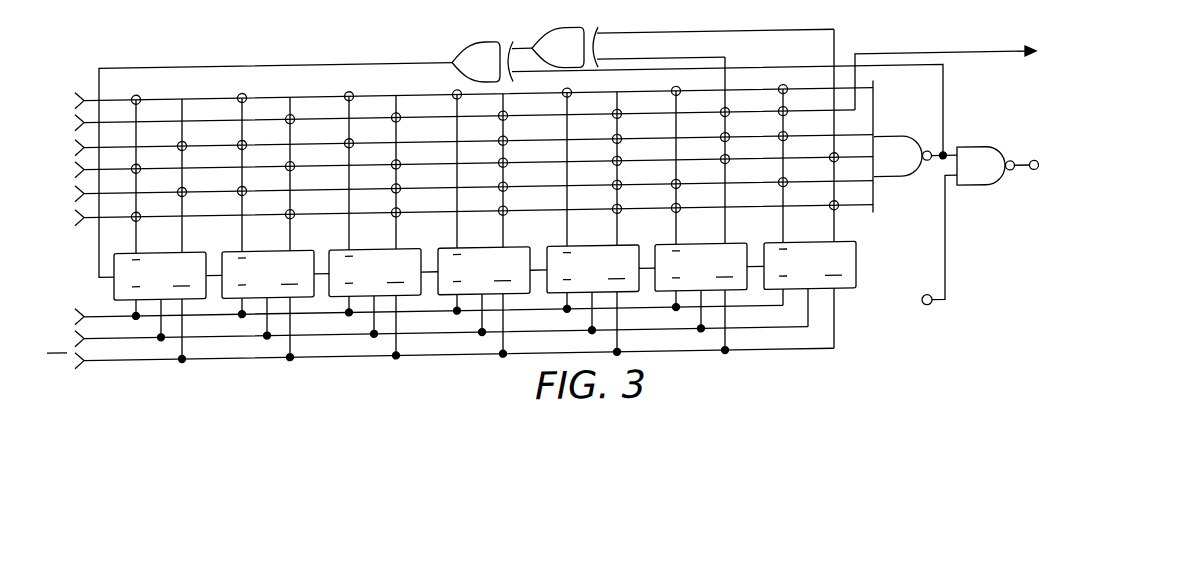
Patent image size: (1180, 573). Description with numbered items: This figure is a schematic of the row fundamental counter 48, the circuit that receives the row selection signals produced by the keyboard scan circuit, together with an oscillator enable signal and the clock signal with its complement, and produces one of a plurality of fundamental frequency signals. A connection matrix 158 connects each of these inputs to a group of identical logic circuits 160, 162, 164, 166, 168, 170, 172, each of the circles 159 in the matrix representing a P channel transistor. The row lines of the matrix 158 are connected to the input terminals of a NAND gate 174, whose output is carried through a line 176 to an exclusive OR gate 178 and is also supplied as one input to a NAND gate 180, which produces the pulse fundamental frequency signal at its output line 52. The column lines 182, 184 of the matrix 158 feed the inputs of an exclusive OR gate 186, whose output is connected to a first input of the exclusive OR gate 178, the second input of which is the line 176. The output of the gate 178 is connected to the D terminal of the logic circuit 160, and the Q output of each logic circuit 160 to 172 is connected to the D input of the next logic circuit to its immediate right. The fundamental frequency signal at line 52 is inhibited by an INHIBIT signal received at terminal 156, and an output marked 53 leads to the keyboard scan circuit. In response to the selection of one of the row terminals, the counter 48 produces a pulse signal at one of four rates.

The row fundamental counter 48 is at (330, 55).
The connection matrix 158 is at (408, 92).
The circles 159 is at (140, 100).
The logic circuit 160 is at (161, 272).
The logic circuit 162 is at (268, 272).
The logic circuit 164 is at (374, 271).
The logic circuit 166 is at (482, 270).
The logic circuit 168 is at (590, 270).
The logic circuit 170 is at (697, 269).
The logic circuit 172 is at (806, 269).
The NAND gate 174 is at (898, 162).
The line 176 is at (946, 96).
The exclusive OR gate 178 is at (448, 58).
The NAND gate 180 is at (980, 170).
The column line 182 is at (727, 69).
The column line 184 is at (834, 59).
The exclusive OR gate 186 is at (600, 57).
The output line 52 is at (1033, 177).
The keyboard scan circuit output 53 is at (966, 67).
The terminal 156 is at (943, 233).